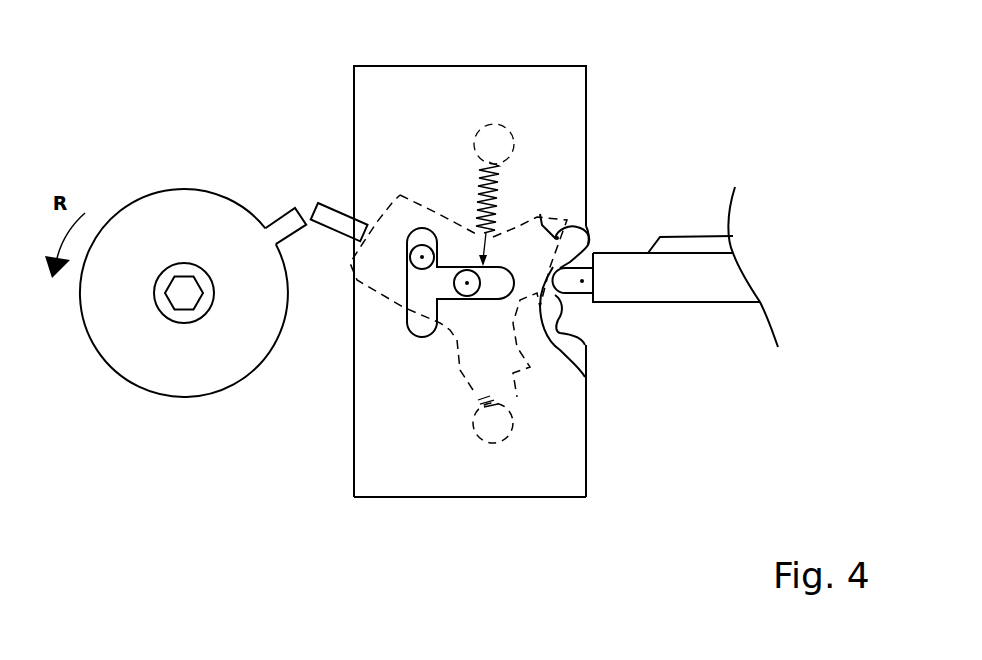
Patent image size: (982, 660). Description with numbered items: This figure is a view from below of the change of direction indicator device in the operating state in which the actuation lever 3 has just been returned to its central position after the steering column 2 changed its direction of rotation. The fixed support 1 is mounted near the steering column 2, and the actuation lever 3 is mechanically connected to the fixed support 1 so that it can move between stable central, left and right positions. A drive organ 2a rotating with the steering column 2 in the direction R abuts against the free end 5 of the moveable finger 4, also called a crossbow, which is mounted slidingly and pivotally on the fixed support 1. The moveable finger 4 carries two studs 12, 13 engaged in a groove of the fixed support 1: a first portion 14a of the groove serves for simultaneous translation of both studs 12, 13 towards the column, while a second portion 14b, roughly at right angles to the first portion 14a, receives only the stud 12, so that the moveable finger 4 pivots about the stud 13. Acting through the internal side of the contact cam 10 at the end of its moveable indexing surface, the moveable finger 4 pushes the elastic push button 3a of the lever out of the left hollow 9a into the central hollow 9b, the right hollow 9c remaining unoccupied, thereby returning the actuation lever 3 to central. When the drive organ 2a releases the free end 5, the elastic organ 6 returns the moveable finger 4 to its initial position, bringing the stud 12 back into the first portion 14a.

The fixed support 1 is at (473, 498).
The steering column 2 is at (177, 405).
The drive organ 2a is at (282, 218).
The actuation lever 3 is at (723, 310).
The elastic push button 3a is at (582, 281).
The moveable finger 4 is at (452, 368).
The free end 5 is at (337, 233).
The elastic organ 6 is at (473, 180).
The left hollow 9a is at (540, 214).
The central hollow 9b is at (585, 335).
The right hollow 9c is at (560, 332).
The contact cam 10 is at (597, 245).
The stud 12 is at (422, 257).
The stud 13 is at (467, 285).
The first portion of the groove 14a is at (496, 236).
The second portion of the groove 14b is at (413, 333).